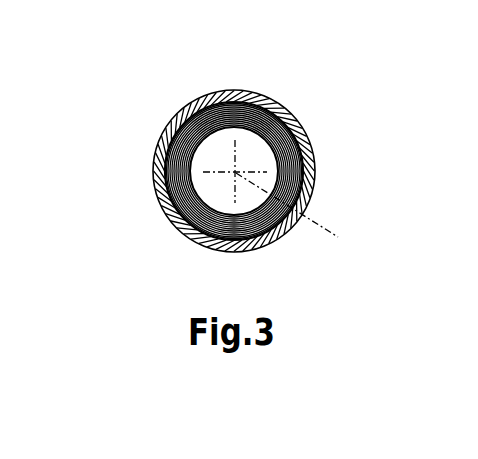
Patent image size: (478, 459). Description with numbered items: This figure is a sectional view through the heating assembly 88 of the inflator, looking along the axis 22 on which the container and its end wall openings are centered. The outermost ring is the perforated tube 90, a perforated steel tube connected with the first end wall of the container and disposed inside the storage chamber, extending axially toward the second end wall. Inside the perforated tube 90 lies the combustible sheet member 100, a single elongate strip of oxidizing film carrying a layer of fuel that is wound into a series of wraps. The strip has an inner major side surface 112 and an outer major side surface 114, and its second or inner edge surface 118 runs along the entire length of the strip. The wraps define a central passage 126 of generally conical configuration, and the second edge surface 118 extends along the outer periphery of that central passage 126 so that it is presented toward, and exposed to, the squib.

The axis 22 is at (280, 197).
The heating assembly 88 is at (370, 118).
The perforated tube 90 is at (336, 172).
The combustible sheet member 100 is at (196, 247).
The inner major side surface 112 is at (251, 104).
The outer major side surface 114 is at (287, 114).
The second edge surface 118 is at (170, 145).
The central passage 126 is at (241, 204).